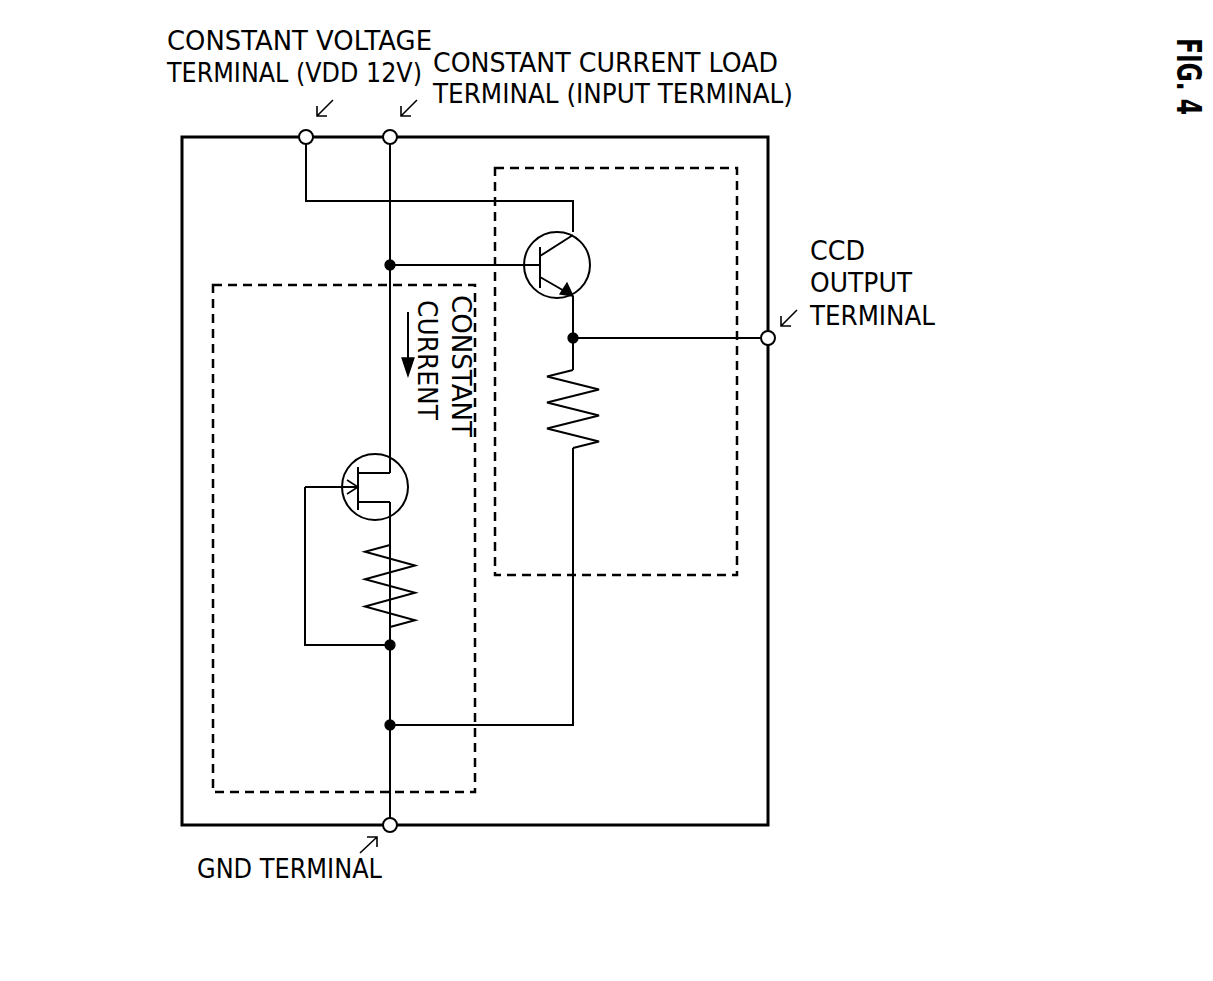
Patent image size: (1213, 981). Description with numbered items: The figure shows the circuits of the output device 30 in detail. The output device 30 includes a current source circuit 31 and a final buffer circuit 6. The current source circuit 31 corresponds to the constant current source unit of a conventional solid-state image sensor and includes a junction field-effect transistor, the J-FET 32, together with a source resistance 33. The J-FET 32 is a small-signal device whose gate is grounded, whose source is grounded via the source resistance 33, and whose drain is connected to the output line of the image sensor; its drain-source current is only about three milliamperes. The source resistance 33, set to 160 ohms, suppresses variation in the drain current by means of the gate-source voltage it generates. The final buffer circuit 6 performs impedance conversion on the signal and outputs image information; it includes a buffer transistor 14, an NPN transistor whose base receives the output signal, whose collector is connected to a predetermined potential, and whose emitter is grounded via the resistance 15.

The output device 30 is at (203, 141).
The current source circuit 31 is at (238, 301).
The junction field-effect transistor (J-FET) 32 is at (351, 442).
The source resistance 33 is at (419, 637).
The resistor 160 is at (410, 579).
The final buffer circuit 6 is at (724, 562).
The buffer transistor 14 is at (616, 252).
The resistance 15 is at (617, 409).